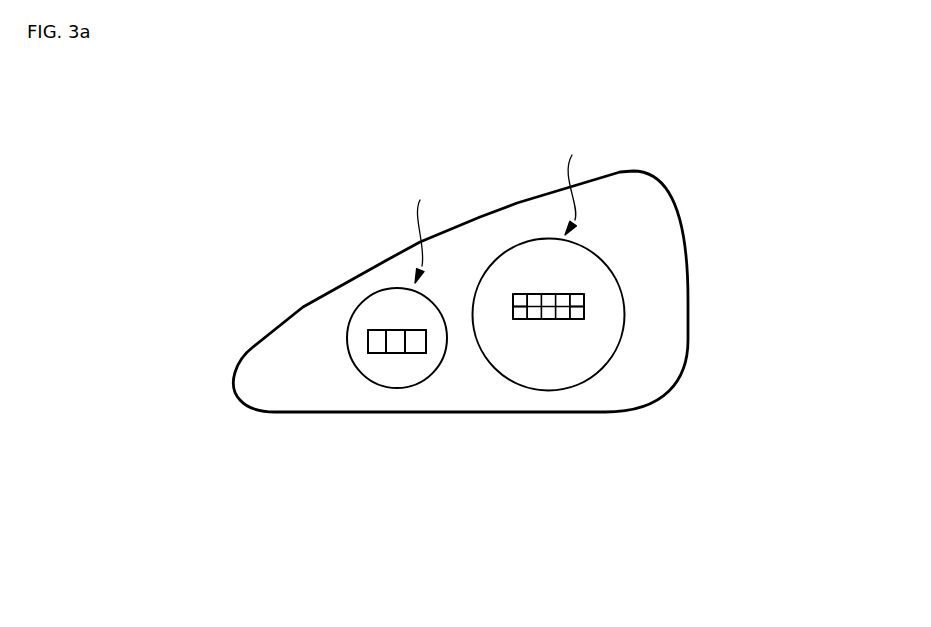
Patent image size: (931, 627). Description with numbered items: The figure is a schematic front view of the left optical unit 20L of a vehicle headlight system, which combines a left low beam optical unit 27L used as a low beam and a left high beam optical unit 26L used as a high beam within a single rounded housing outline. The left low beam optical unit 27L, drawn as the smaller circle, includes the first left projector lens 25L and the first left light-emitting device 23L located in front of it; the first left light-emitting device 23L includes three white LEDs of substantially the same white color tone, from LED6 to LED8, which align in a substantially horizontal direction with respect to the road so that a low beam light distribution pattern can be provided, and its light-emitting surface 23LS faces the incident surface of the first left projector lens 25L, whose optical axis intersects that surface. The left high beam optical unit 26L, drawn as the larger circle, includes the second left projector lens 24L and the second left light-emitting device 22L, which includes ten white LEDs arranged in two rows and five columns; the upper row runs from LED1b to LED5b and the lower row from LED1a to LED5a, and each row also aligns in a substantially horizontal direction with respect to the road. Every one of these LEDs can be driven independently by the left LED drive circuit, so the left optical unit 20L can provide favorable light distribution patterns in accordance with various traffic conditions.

The left optical unit 20L is at (675, 185).
The second left light-emitting device 22L is at (584, 313).
The first left light-emitting device 23L is at (368, 338).
The light-emitting surface 23LS is at (396, 337).
The second left projector lens 24L is at (562, 390).
The first left projector lens 25L is at (410, 389).
The left high beam optical unit 26L is at (576, 184).
The left low beam optical unit 27L is at (419, 230).
The white LED LED1a is at (578, 318).
The white LED LED1b is at (573, 302).
The white LED LED5a is at (520, 319).
The white LED LED5b is at (520, 293).
The white LED LED6 is at (420, 332).
The white LED LED8 is at (377, 340).